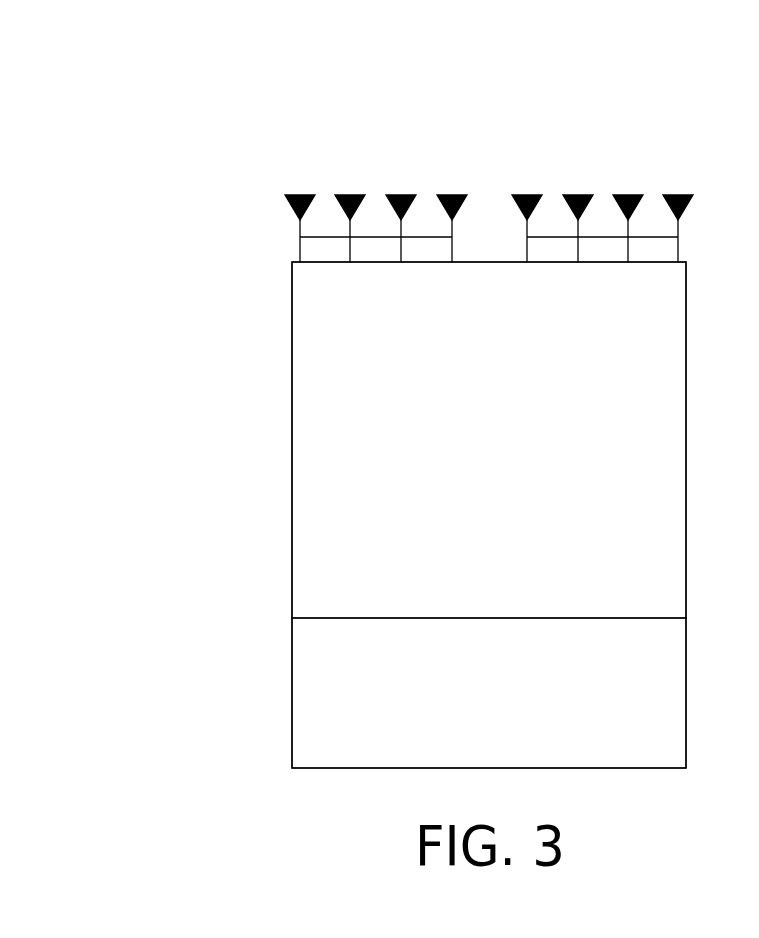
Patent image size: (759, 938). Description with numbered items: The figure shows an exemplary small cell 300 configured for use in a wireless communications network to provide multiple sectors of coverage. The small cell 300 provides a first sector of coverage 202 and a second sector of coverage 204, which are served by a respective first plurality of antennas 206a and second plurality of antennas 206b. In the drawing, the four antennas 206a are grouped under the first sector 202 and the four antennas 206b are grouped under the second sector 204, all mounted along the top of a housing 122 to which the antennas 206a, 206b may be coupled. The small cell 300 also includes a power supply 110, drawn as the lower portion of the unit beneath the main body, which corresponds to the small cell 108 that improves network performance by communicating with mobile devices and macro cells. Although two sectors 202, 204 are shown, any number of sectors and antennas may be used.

The small cell 300 is at (80, 156).
The housing 122 is at (291, 333).
The small cell 108 is at (672, 443).
The power supply 110 is at (672, 687).
The first sector of coverage 202 is at (472, 119).
The second sector of coverage 204 is at (698, 119).
The first plurality of antennas 206a is at (302, 193).
The second plurality of antennas 206b is at (528, 193).